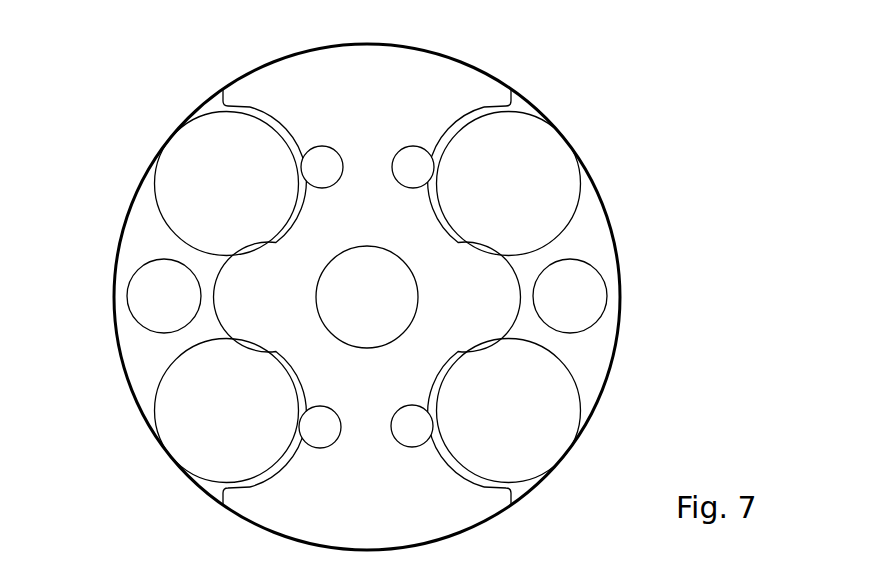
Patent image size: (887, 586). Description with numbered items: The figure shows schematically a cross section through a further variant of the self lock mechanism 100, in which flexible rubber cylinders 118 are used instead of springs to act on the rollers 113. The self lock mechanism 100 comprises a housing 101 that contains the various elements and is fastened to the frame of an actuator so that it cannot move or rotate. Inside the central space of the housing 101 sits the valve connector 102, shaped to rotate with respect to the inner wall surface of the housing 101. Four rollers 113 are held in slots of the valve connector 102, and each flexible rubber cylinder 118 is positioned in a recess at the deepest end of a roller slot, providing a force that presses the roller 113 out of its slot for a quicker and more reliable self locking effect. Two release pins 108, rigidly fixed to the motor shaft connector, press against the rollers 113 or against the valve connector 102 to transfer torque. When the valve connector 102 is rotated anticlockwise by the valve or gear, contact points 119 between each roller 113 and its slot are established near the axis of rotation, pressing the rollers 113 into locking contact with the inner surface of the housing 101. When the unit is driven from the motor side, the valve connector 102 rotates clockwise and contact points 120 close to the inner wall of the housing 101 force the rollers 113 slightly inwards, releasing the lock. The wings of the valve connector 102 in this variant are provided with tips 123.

The self lock mechanism 100 is at (368, 283).
The housing 101 is at (117, 239).
The valve connector 102 is at (367, 297).
The release pins 108 is at (165, 307).
The rollers 113 is at (368, 297).
The flexible rubber cylinders 118 is at (414, 162).
The contact points 119 is at (270, 242).
The contact points 120 is at (253, 105).
The tips 123 is at (226, 94).